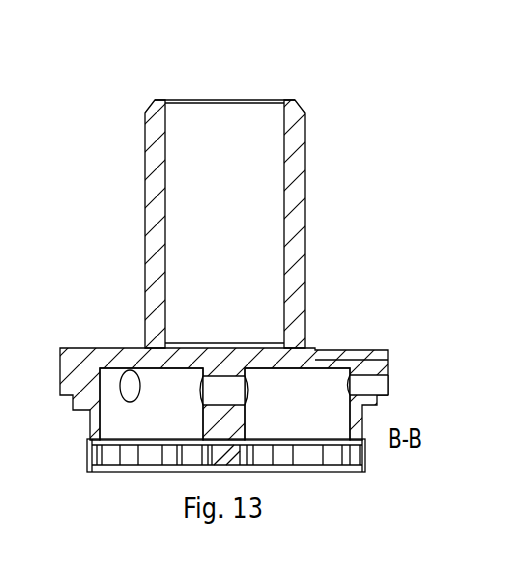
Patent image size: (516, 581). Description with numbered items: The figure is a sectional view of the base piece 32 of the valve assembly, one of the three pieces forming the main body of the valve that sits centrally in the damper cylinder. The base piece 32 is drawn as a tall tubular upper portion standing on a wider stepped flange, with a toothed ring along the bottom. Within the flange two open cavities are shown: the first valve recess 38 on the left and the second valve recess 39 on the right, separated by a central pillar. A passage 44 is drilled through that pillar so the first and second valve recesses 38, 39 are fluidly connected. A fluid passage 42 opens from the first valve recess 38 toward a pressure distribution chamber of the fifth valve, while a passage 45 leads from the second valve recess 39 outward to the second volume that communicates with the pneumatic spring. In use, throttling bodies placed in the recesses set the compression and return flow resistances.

The base piece 32 is at (350, 104).
The first valve recess 38 is at (150, 420).
The second valve recess 39 is at (302, 420).
The fluid passages 42 is at (127, 371).
The passage 44 is at (233, 385).
The passage 45 is at (336, 362).